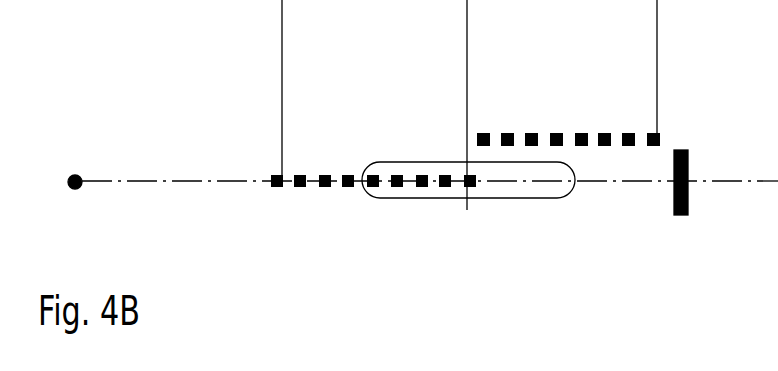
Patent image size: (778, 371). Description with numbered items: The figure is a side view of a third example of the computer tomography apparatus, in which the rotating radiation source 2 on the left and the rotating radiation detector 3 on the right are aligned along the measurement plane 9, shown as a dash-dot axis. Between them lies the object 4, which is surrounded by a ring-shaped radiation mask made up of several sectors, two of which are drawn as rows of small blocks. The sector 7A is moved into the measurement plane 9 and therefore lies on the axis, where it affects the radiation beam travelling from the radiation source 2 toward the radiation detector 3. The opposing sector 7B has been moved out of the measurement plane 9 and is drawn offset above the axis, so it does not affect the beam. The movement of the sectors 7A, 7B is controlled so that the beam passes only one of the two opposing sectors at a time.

The radiation source 2 is at (112, 159).
The radiation detector 3 is at (645, 201).
The object 4 is at (468, 203).
The sector 7A is at (360, 205).
The sector 7B is at (568, 116).
The measurement plane 9 is at (430, 208).